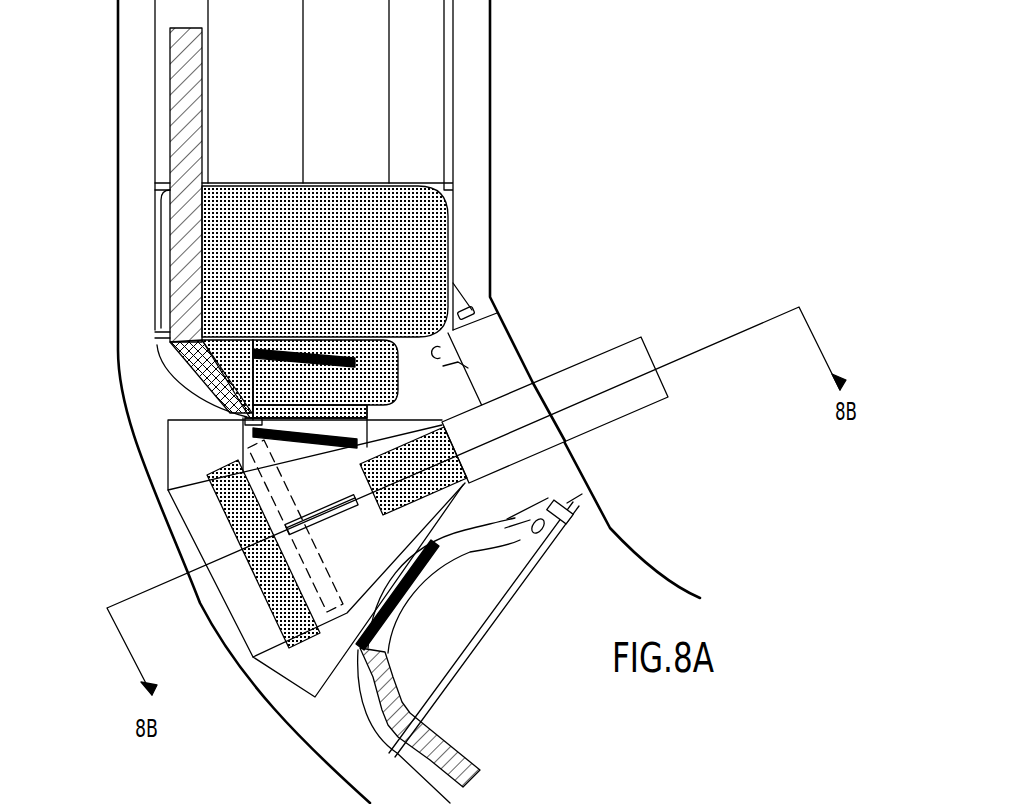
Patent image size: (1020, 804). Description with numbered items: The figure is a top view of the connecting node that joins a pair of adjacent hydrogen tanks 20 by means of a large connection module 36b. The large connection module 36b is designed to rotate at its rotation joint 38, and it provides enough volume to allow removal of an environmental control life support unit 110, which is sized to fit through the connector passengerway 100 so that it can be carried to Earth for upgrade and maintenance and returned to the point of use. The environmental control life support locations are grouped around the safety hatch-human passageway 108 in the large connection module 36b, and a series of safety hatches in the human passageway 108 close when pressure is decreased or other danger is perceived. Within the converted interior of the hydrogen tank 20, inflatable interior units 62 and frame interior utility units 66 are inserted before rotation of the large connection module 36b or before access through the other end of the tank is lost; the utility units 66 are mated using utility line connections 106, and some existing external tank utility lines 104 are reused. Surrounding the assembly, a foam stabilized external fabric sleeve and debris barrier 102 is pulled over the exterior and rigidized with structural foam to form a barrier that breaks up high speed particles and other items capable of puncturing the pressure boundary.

The hydrogen tank 20 is at (593, 616).
The large connection module 36b is at (243, 592).
The rotation joint 38 is at (288, 663).
The inflatable interior unit 62 is at (387, 253).
The frame interior utility unit 66 is at (200, 147).
The connector passengerway 100 is at (600, 355).
The external fabric sleeve and debris barrier 102 is at (117, 248).
The external tank utility line 104 is at (617, 540).
The utility line connection 106 is at (192, 113).
The safety hatch-human passageway 108 is at (243, 417).
The environmental control life support unit 110 is at (462, 445).